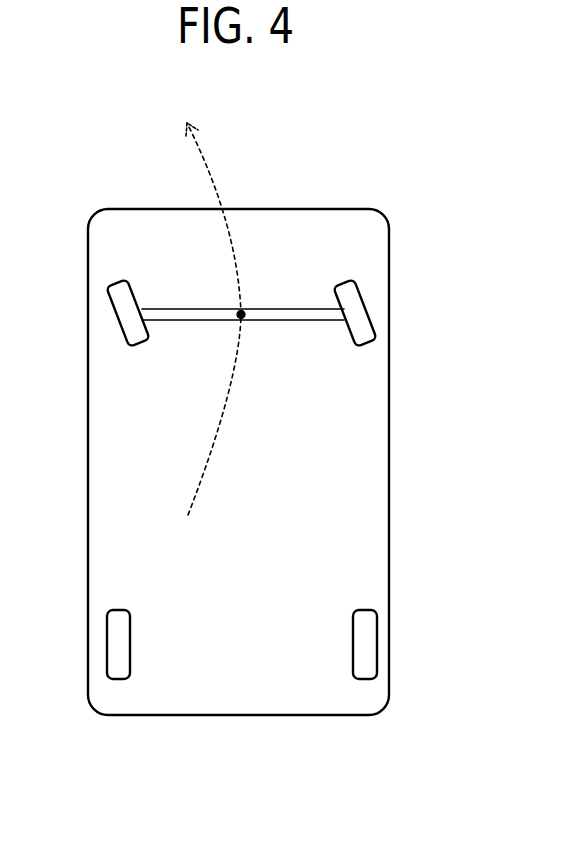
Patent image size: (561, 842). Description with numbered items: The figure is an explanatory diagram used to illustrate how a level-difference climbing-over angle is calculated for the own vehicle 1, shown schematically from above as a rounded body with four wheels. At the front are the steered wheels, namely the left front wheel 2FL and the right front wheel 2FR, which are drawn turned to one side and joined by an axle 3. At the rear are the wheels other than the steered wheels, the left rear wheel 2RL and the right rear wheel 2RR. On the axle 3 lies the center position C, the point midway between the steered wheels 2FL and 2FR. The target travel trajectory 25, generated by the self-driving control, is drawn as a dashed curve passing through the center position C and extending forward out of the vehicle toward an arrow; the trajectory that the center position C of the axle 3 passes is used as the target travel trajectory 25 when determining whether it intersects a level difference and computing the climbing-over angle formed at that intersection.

The own vehicle 1 is at (355, 208).
The axle 3 is at (166, 308).
The center position C is at (241, 314).
The target travel trajectory 25 is at (210, 173).
The left front wheel 2FL is at (144, 346).
The right front wheel 2FR is at (368, 344).
The left rear wheel 2RL is at (118, 680).
The right rear wheel 2RR is at (364, 680).